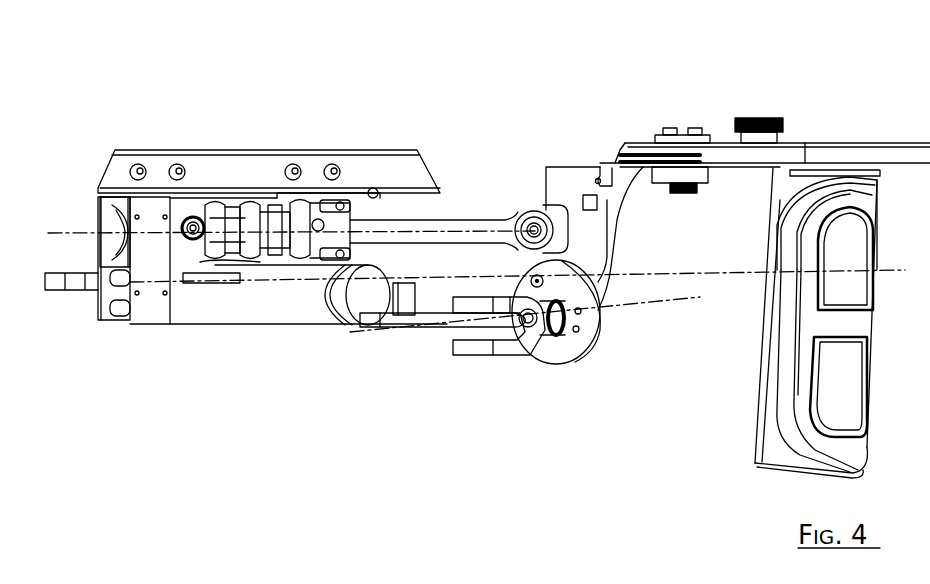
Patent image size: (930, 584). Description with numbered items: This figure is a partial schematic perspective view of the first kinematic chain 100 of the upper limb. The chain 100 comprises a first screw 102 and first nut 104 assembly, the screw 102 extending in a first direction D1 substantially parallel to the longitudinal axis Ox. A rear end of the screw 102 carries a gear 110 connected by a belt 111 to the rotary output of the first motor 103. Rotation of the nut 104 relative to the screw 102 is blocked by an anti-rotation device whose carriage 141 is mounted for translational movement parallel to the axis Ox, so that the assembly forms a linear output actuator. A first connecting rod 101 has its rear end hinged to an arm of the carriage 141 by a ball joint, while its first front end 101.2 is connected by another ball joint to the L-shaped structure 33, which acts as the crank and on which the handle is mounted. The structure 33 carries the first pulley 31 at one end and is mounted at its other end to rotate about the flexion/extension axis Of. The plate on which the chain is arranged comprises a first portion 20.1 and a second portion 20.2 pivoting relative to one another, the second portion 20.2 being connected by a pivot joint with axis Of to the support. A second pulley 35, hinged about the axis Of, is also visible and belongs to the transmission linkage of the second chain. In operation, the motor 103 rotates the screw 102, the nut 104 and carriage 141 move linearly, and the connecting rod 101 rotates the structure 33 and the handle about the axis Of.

The first kinematic chain 100 is at (345, 88).
The gear 110 is at (115, 215).
The belt 111 is at (123, 230).
The carriage 141 is at (376, 190).
The first connecting rod 101 is at (452, 238).
The first front end 101.2 is at (528, 210).
The L-shaped structure 33 is at (573, 160).
The first pulley 31 is at (622, 143).
The first direction D1 is at (50, 237).
The first screw 102 is at (200, 262).
The first nut 104 is at (257, 250).
The first motor 103 is at (300, 307).
The first portion 20.1 is at (418, 327).
The second portion 20.2 is at (500, 352).
The second pulley 35 is at (578, 335).
The flexion/extension axis Of is at (686, 300).
The longitudinal axis Ox is at (897, 270).